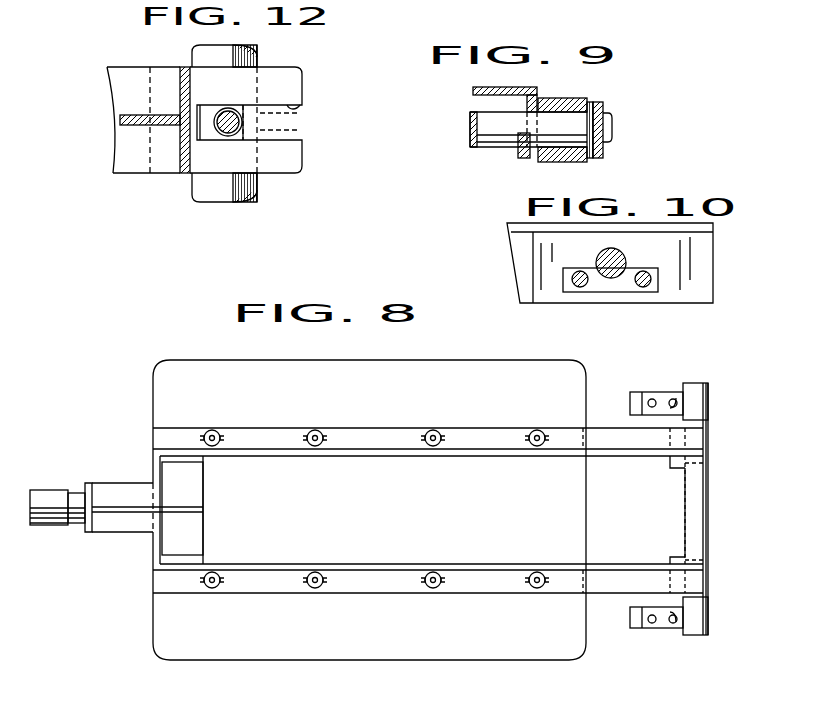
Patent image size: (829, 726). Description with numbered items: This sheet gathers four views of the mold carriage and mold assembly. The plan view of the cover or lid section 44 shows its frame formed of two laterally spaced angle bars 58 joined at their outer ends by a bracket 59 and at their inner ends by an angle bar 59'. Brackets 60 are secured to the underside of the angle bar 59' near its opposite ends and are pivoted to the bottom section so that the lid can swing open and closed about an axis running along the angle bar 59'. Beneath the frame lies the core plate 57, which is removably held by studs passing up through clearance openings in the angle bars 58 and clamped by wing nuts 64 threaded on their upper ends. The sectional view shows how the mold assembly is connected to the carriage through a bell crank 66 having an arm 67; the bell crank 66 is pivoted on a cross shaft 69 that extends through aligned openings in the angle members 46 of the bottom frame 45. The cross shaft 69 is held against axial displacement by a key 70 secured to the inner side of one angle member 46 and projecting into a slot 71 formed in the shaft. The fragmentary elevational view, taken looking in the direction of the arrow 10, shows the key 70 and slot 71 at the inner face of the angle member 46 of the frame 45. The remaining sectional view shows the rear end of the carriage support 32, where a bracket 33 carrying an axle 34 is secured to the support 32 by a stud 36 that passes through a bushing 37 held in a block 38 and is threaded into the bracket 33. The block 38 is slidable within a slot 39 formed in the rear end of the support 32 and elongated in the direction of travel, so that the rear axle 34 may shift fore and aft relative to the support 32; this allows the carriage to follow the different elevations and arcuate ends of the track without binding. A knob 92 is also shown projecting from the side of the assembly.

In FIG. 9, the arrow 10 is at (452, 125).
In FIG. 12, the support 32 is at (140, 163).
In FIG. 12, the bracket 33 is at (296, 123).
In FIG. 12, the axle 34 is at (258, 190).
In FIG. 12, the stud 36 is at (224, 132).
In FIG. 12, the bushing 37 is at (229, 109).
In FIG. 12, the block 38 is at (240, 136).
In FIG. 12, the slot 39 is at (298, 106).
In FIG. 8, the cover or lid section 44 is at (517, 655).
In FIG. 9, the frame 45 is at (470, 91).
In FIG. 10, the frame 45 is at (700, 288).
In FIG. 9, the angle member 46 is at (537, 95).
In FIG. 10, the angle member 46 is at (705, 270).
In FIG. 8, the core plate 57 is at (387, 400).
In FIG. 8, the angle bar 58 is at (282, 433).
In FIG. 8, the bracket 59 is at (205, 510).
In FIG. 8, the angle bar 59' is at (712, 509).
In FIG. 8, the bracket 60 is at (676, 463).
In FIG. 8, the wing nut 64 is at (217, 433).
In FIG. 9, the bell crank 66 is at (576, 160).
In FIG. 8, the bell crank 66 is at (708, 385).
In FIG. 8, the arm 67 is at (638, 397).
In FIG. 9, the cross shaft 69 is at (500, 148).
In FIG. 10, the cross shaft 69 is at (627, 262).
In FIG. 10, the key 70 is at (621, 284).
In FIG. 9, the slot 71 is at (521, 132).
In FIG. 8, the knob 92 is at (52, 490).